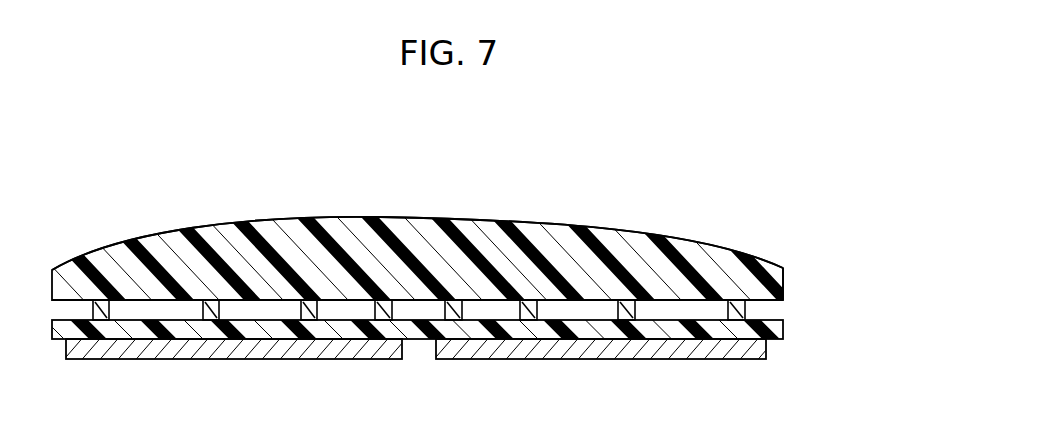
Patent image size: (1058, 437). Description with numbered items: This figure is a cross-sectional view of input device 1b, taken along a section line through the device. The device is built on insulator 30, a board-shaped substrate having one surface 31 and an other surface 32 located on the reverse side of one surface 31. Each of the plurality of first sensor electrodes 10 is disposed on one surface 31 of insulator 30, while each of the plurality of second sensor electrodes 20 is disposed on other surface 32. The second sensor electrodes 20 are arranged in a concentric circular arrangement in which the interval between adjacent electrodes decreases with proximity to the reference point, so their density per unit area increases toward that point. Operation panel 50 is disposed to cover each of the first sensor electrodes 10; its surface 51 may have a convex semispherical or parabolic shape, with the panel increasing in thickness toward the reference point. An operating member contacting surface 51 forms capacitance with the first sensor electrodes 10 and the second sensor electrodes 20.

The input device 1b is at (765, 177).
The operation panel 50 is at (783, 266).
The surface of operation panel 51 is at (518, 219).
The other surface of insulator 32 is at (325, 318).
The second sensor electrodes 20 is at (747, 307).
The insulator 30 is at (770, 338).
The one surface of insulator 31 is at (328, 359).
The first sensor electrodes 10 is at (557, 360).